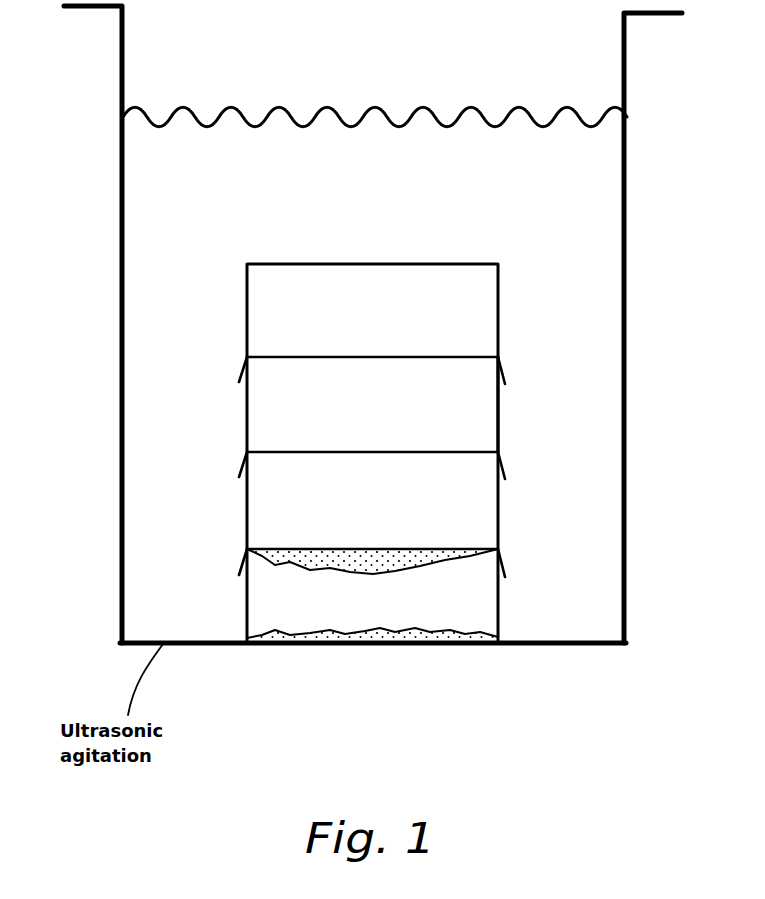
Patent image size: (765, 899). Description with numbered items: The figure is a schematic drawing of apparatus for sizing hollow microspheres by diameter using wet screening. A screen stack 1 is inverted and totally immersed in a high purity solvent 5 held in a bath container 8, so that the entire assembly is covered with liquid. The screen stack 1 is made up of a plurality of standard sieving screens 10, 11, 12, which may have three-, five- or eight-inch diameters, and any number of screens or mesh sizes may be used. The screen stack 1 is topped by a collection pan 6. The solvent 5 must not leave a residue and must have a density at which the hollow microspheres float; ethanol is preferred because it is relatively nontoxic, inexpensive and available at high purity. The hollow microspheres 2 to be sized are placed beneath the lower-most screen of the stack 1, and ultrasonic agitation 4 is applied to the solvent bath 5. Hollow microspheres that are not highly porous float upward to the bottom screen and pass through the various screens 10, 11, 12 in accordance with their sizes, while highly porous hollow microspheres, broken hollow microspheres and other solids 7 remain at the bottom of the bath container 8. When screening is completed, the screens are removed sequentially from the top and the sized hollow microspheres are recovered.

The screen stack 1 is at (498, 437).
The hollow microspheres 2 is at (412, 557).
The ultrasonic agitation 4 is at (208, 646).
The high purity solvent 5 is at (382, 207).
The collection pan 6 is at (498, 298).
The other solids 7 is at (353, 633).
The bath container 8 is at (121, 486).
The sieving screen 10 is at (397, 357).
The sieving screen 11 is at (395, 452).
The sieving screen 12 is at (297, 548).